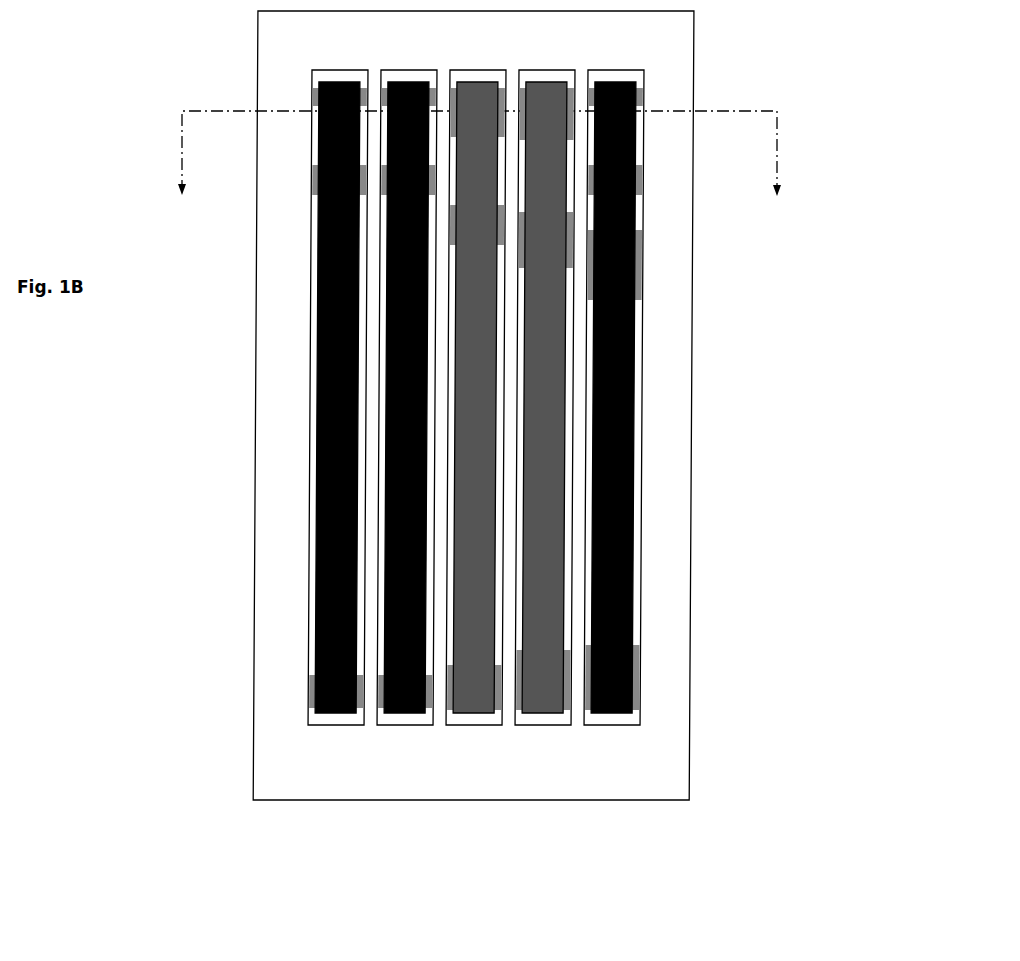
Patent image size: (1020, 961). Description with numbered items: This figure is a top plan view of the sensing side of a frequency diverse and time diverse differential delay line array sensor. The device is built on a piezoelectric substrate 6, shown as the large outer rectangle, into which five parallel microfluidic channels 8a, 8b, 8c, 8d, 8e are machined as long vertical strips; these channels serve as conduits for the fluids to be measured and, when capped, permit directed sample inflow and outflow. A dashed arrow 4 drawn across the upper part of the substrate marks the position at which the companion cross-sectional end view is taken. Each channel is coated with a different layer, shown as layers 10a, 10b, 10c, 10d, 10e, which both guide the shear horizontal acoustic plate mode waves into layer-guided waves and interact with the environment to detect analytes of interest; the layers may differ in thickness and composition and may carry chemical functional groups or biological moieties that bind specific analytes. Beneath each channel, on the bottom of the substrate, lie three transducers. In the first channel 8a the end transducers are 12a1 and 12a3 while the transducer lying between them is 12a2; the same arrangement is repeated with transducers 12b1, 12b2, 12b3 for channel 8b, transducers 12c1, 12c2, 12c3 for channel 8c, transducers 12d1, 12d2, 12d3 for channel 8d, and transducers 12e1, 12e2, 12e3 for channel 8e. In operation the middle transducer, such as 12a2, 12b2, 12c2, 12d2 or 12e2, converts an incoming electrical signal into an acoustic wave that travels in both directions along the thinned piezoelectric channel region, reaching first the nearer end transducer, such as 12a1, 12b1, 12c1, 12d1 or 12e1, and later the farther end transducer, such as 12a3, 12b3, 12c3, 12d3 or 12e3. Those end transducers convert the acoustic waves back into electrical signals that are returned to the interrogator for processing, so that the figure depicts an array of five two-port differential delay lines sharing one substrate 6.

The dashed arrow 4 is at (779, 152).
The piezoelectric substrate 6 is at (257, 372).
The microfluidic channel 8a is at (330, 729).
The microfluidic channel 8b is at (402, 729).
The microfluidic channel 8c is at (473, 729).
The microfluidic channel 8d is at (541, 729).
The microfluidic channel 8e is at (612, 729).
The layer 10a is at (325, 433).
The layer 10b is at (395, 466).
The layer 10c is at (476, 423).
The layer 10d is at (545, 460).
The layer 10e is at (615, 497).
The end transducer 12a1 is at (280, 87).
The transducer 12a2 is at (325, 229).
The end transducer 12a3 is at (318, 650).
The end transducer 12b1 is at (315, 67).
The transducer 12b2 is at (395, 269).
The end transducer 12b3 is at (388, 619).
The end transducer 12c1 is at (610, 72).
The transducer 12c2 is at (341, 265).
The end transducer 12c3 is at (327, 639).
The end transducer 12d1 is at (645, 87).
The transducer 12d2 is at (649, 263).
The end transducer 12d3 is at (649, 636).
The end transducer 12e1 is at (680, 85).
The transducer 12e2 is at (635, 337).
The end transducer 12e3 is at (632, 603).